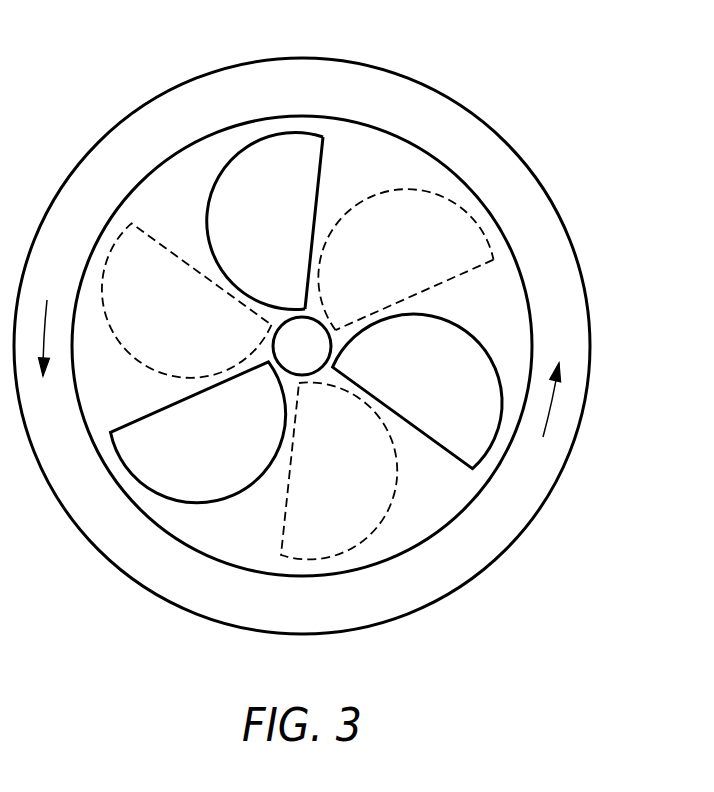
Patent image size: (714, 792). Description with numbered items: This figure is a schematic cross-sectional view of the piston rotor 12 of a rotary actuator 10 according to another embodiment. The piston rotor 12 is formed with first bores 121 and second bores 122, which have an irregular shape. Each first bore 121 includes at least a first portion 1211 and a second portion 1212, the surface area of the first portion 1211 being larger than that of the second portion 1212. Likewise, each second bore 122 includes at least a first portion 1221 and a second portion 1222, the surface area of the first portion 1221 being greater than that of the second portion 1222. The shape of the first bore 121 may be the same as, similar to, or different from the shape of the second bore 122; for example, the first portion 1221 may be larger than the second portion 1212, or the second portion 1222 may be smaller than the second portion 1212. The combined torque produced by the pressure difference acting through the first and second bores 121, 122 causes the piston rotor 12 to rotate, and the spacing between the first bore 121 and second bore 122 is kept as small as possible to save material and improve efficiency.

The rotary actuator 10 is at (448, 122).
The piston rotor 12 is at (379, 123).
The first bore 121 is at (321, 269).
The first portion of the first bore 1211 is at (233, 162).
The second portion of the first bore 1212 is at (320, 170).
The second bore 122 is at (376, 334).
The first portion of the second bore 1221 is at (463, 202).
The second portion of the second bore 1222 is at (470, 273).